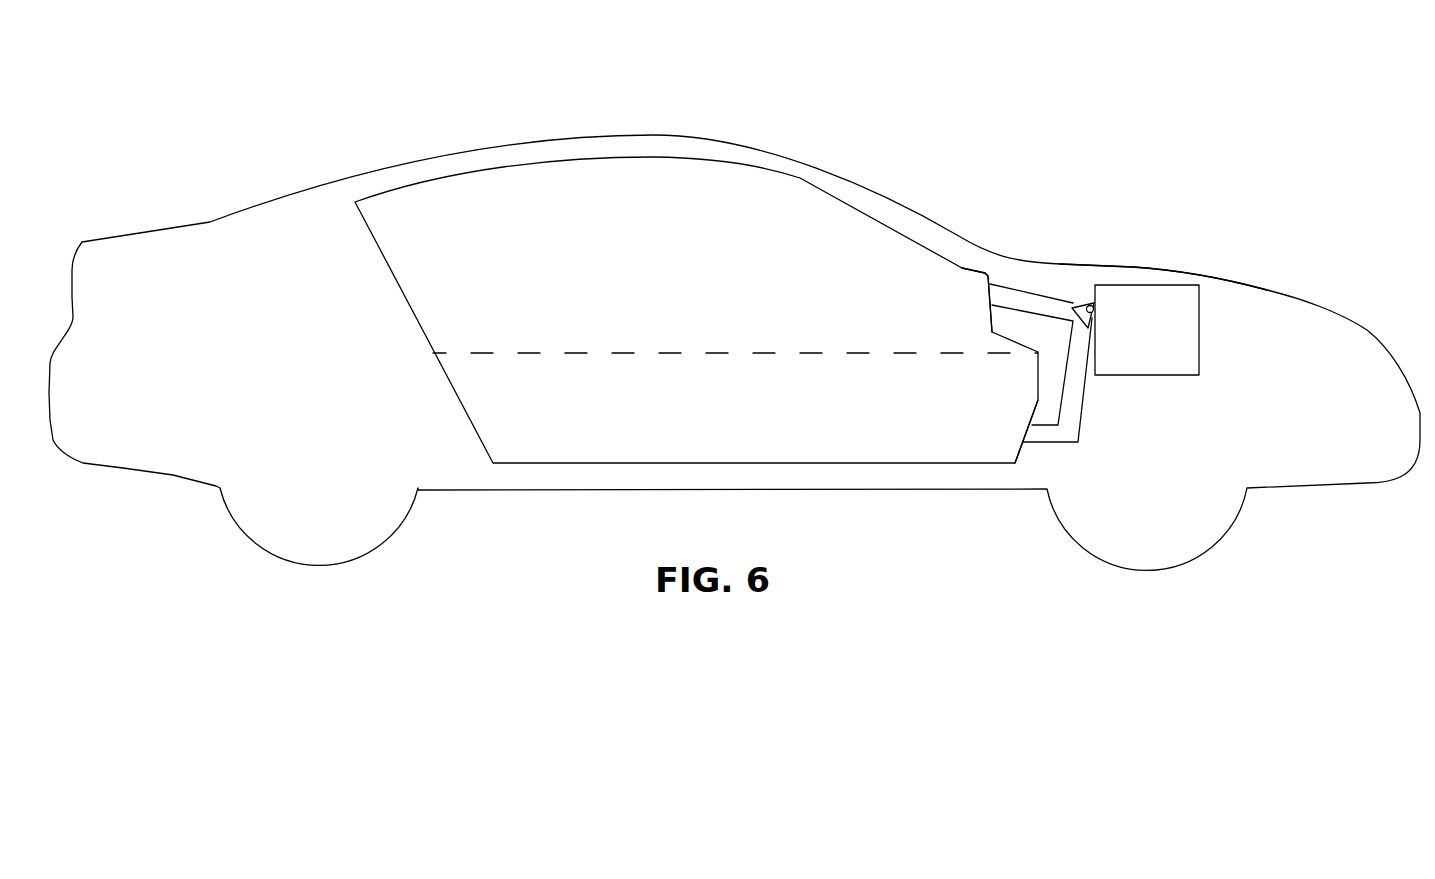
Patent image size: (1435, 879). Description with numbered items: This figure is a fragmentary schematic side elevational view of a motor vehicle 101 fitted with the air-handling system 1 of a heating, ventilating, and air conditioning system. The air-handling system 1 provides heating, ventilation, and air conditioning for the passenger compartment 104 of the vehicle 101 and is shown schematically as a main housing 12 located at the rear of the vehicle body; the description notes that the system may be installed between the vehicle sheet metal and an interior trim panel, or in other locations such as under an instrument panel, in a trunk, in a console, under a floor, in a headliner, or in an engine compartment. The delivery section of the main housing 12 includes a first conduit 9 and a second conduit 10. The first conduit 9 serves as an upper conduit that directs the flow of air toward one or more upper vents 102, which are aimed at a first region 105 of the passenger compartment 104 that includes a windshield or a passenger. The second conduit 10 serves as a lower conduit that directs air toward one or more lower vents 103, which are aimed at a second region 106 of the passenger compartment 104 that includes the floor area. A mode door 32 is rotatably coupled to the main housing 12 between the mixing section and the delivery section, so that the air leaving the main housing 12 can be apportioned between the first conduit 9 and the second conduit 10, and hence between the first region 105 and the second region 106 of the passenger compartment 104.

The air-handling system 1 is at (1160, 278).
The first conduit 9 is at (1032, 302).
The second conduit 10 is at (1048, 435).
The main housing 12 is at (1157, 342).
The mode door 32 is at (1073, 307).
The motor vehicle 101 is at (1140, 150).
The upper vents 102 is at (988, 297).
The lower vents 103 is at (1023, 437).
The passenger compartment 104 is at (720, 194).
The first region 105 is at (843, 275).
The second region 106 is at (843, 423).